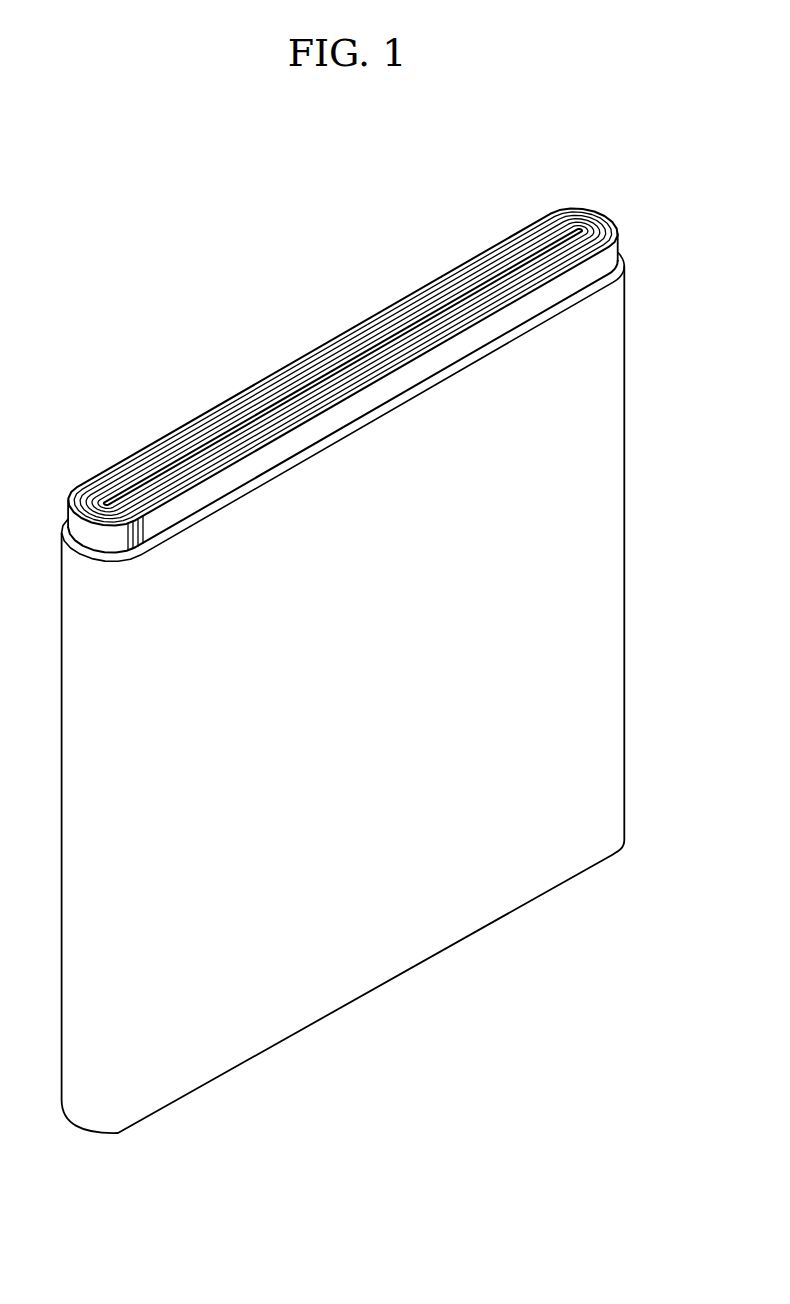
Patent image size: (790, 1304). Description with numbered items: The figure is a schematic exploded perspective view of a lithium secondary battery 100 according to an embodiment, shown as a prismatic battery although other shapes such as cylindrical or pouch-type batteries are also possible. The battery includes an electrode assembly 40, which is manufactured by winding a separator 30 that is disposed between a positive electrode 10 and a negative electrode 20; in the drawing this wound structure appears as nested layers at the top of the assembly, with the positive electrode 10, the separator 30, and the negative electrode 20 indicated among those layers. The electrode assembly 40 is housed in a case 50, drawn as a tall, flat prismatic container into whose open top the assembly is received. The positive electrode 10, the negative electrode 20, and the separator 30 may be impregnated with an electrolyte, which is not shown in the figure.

The lithium secondary battery 100 is at (291, 122).
The positive electrode 10 is at (619, 232).
The negative electrode 20 is at (577, 223).
The separator 30 is at (600, 222).
The electrode assembly 40 is at (314, 312).
The case 50 is at (612, 538).